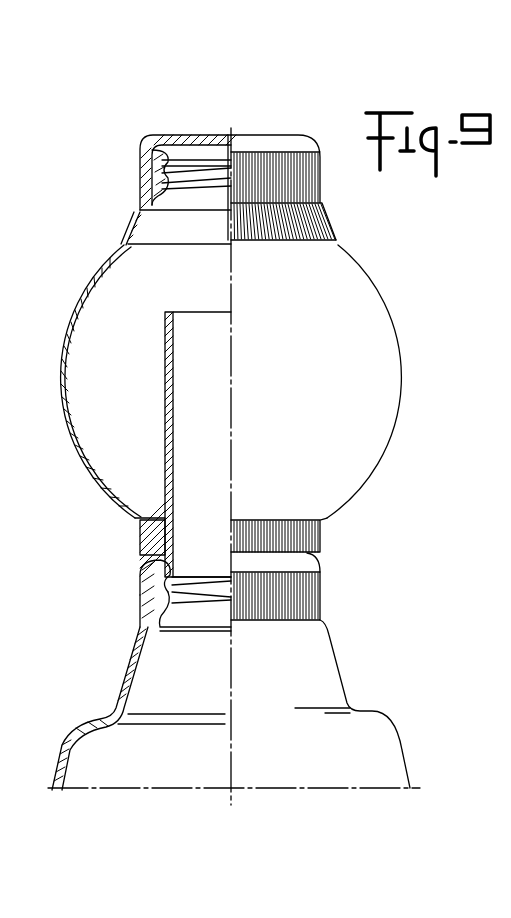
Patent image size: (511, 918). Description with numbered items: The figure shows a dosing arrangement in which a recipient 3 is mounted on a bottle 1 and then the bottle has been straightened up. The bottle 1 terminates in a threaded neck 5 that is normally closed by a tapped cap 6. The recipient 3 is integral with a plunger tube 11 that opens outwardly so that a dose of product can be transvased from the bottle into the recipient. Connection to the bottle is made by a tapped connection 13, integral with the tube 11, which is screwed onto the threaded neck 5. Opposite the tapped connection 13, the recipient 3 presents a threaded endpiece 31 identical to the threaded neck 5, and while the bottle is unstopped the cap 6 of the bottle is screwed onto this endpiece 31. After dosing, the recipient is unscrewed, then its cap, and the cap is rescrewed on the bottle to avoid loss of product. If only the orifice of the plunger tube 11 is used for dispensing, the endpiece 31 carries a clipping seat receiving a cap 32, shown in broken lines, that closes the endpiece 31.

The bottle 1 is at (118, 700).
The recipient 3 is at (401, 358).
The threaded neck 5 is at (141, 607).
The tapped cap 6 is at (257, 148).
The plunger tube 11 is at (165, 340).
The tapped connection 13 is at (141, 583).
The threaded endpiece 31 is at (142, 187).
The cap 32 is at (205, 183).